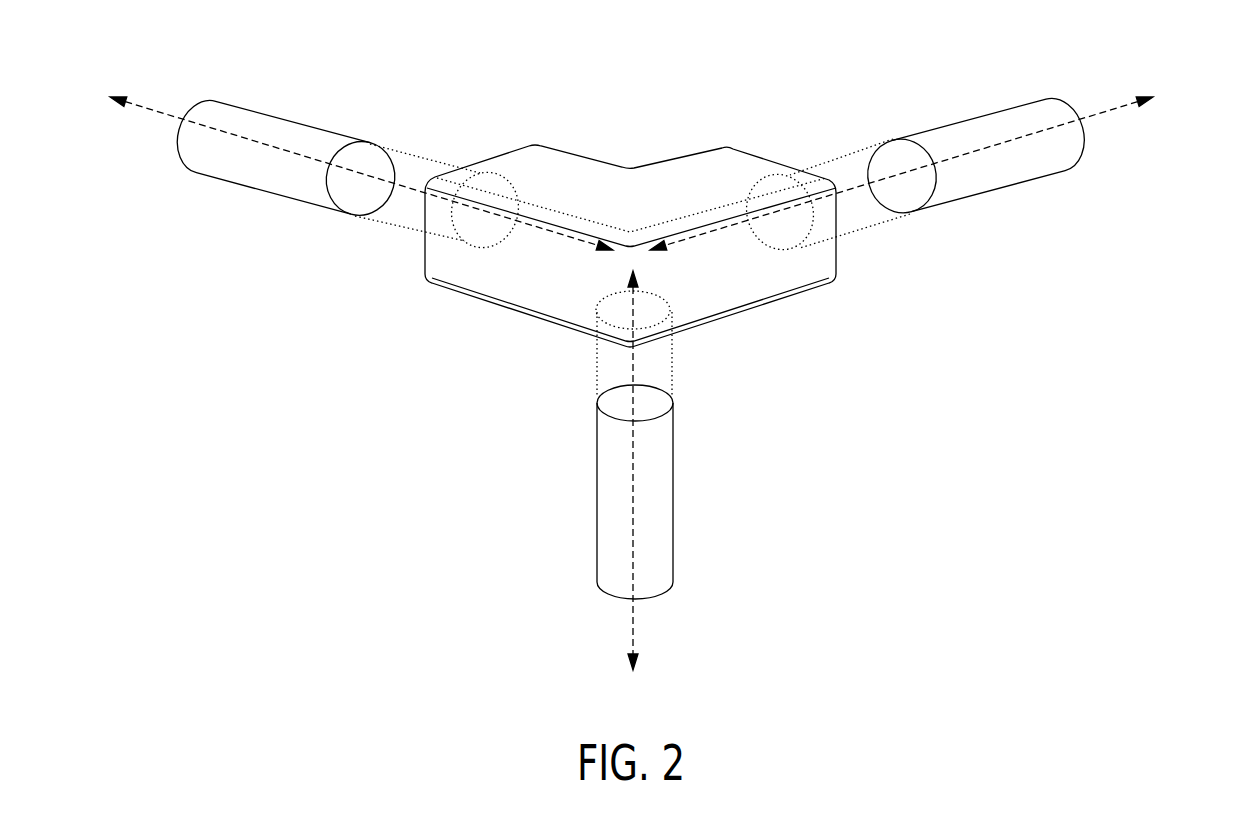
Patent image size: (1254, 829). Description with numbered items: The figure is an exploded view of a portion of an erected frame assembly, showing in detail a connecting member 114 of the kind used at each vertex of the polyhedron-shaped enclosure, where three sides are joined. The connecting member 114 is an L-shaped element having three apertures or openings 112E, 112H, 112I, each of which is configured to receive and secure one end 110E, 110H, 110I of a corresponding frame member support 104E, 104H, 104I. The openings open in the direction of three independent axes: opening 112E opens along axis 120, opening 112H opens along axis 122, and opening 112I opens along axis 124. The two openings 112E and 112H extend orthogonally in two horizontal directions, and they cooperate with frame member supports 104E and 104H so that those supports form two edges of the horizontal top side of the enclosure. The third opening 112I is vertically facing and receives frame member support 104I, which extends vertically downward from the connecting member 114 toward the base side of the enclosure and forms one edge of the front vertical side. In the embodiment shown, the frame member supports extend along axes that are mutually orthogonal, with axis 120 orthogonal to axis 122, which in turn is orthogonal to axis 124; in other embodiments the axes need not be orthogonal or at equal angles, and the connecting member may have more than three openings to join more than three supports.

The frame member support 104H is at (240, 85).
The frame member support 104E is at (979, 86).
The frame member support 104I is at (561, 506).
The end of frame member support 110H is at (369, 124).
The end of frame member support 110E is at (888, 116).
The end of frame member support 110I is at (560, 406).
The opening 112H is at (476, 232).
The opening 112E is at (803, 228).
The opening 112I is at (659, 316).
The connecting member 114 is at (620, 130).
The axis 120 is at (919, 166).
The axis 122 is at (345, 167).
The axis 124 is at (632, 489).